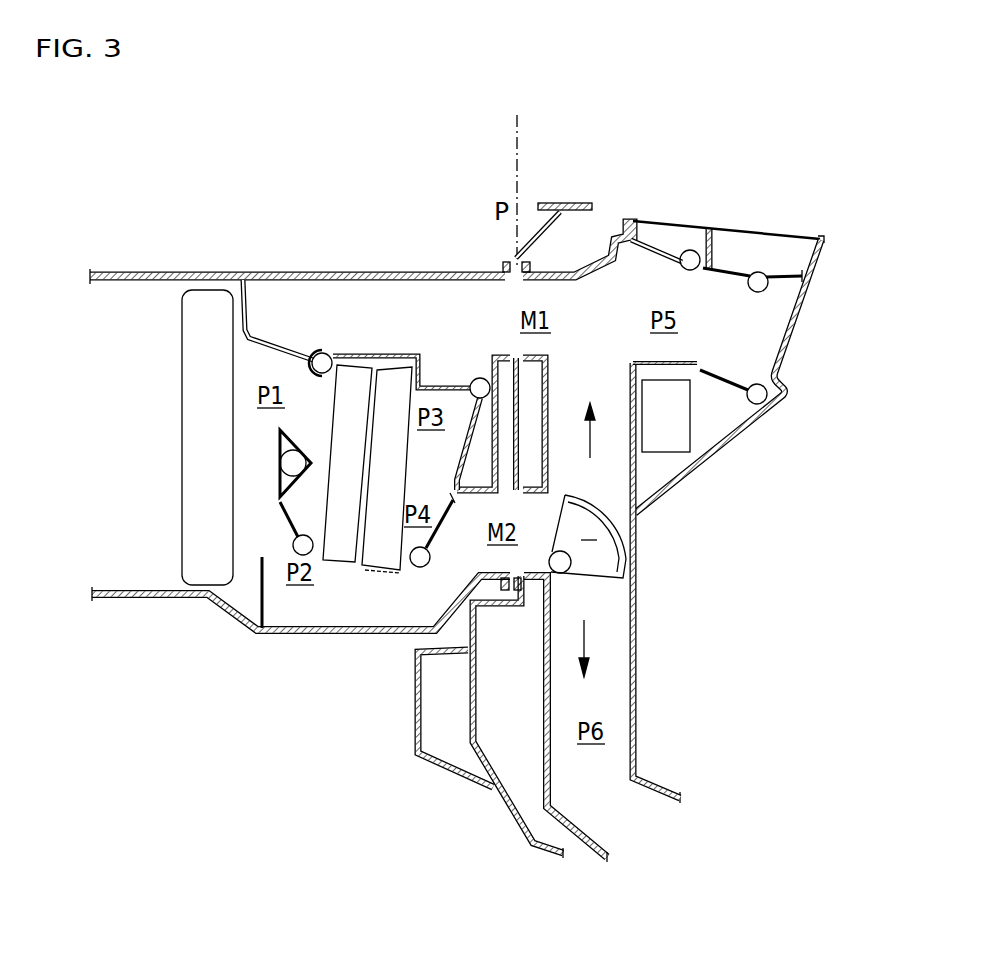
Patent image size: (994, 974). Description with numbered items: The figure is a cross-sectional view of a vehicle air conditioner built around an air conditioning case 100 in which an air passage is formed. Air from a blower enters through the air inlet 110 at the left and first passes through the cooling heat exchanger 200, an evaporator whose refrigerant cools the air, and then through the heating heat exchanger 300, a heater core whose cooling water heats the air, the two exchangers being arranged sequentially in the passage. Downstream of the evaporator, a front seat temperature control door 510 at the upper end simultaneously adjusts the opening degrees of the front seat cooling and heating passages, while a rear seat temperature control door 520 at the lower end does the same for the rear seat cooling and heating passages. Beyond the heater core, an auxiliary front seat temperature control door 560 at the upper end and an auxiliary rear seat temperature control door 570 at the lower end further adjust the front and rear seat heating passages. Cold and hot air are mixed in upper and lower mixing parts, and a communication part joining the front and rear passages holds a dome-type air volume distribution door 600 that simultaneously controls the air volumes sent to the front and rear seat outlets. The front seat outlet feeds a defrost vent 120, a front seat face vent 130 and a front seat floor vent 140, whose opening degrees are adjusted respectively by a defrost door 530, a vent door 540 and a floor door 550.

The air conditioning case 100 is at (370, 270).
The air inlet 110 is at (143, 432).
The defrost vent 120 is at (690, 232).
The front seat face vent 130 is at (743, 240).
The front seat floor vent 140 is at (670, 425).
The cooling heat exchanger 200 is at (203, 550).
The heating heat exchanger 300 is at (380, 553).
The front seat temperature control door 510 is at (283, 347).
The rear seat temperature control door 520 is at (285, 520).
The defrost door 530 is at (653, 245).
The vent door 540 is at (783, 270).
The floor door 550 is at (727, 385).
The auxiliary front seat temperature control door 560 is at (450, 385).
The auxiliary rear seat temperature control door 570 is at (430, 550).
The air volume distribution door 600 is at (633, 597).